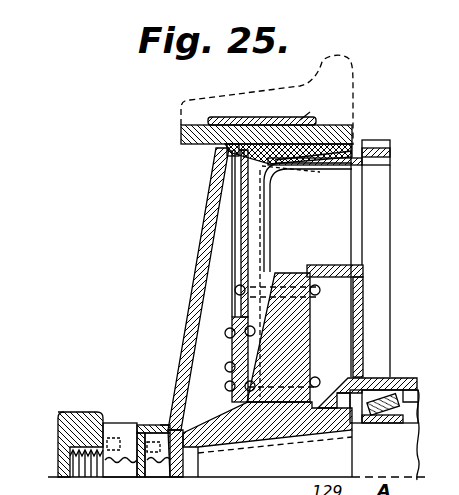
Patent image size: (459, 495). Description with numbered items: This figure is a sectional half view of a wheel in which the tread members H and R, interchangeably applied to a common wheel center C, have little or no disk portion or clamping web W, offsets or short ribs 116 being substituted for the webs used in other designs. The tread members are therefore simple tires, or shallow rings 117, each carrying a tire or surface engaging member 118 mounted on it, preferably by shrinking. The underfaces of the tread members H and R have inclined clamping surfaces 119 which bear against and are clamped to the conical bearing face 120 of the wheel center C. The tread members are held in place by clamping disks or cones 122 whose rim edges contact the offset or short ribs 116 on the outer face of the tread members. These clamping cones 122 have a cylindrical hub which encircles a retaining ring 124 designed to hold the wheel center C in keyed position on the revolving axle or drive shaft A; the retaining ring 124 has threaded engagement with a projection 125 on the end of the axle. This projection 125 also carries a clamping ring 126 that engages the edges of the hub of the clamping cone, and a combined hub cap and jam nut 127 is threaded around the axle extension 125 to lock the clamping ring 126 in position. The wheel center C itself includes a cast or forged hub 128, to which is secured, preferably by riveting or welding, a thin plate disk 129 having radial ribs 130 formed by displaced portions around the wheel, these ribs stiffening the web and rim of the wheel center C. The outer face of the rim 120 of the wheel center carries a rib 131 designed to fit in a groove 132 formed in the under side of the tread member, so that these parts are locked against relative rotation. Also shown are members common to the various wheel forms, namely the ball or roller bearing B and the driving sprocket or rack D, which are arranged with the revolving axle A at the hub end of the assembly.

The offsets or short ribs 116 is at (228, 156).
The shallow rings 117 is at (181, 137).
The tire or surface engaging member 118 is at (242, 117).
The inclined clamping surfaces 119 is at (327, 165).
The conical bearing face 120 is at (294, 170).
The clamping disks or cones 122 is at (188, 313).
The retaining ring 124 is at (184, 432).
The projection or axle extension 125 is at (59, 428).
The clamping ring 126 is at (136, 427).
The combined hub cap and jam nut 127 is at (84, 412).
The cast or forged hub 128 is at (250, 420).
The thin plate disk 129 is at (252, 266).
The radial ribs 130 is at (261, 234).
The rib 131 is at (320, 130).
The groove 132 is at (320, 124).
The revolving axle or drive shaft A is at (392, 438).
The ball or roller bearing B is at (396, 372).
The wheel center C is at (251, 218).
The driving sprocket or rack D is at (392, 149).
The tread member H is at (302, 120).
The tread member R is at (284, 90).
The web or spoke portion W is at (232, 149).